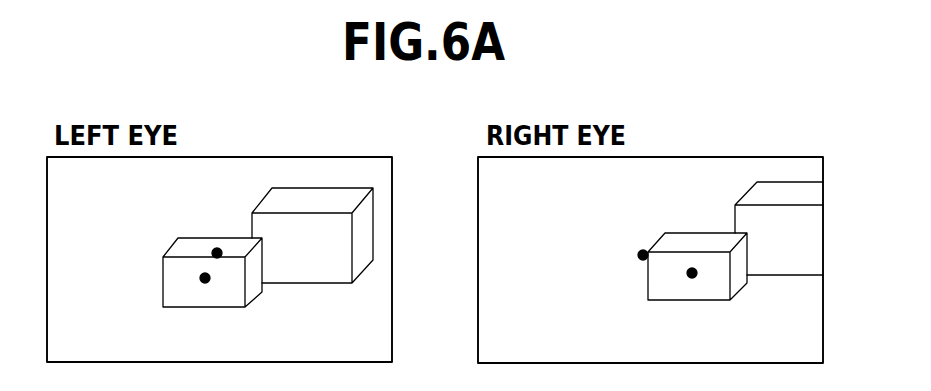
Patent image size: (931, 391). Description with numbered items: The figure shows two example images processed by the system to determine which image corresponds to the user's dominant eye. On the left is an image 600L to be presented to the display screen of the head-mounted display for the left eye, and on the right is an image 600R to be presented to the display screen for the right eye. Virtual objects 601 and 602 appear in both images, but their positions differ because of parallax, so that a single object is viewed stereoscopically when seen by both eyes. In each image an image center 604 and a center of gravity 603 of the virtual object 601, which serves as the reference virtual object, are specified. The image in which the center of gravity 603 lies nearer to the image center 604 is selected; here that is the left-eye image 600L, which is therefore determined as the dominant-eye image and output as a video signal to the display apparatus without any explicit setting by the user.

The image for the left eye 600L is at (262, 157).
The image for the right eye 600R is at (693, 157).
The virtual object 601 is at (173, 270).
The virtual object 602 is at (275, 202).
The center of gravity 603 is at (205, 278).
The image center 604 is at (217, 253).